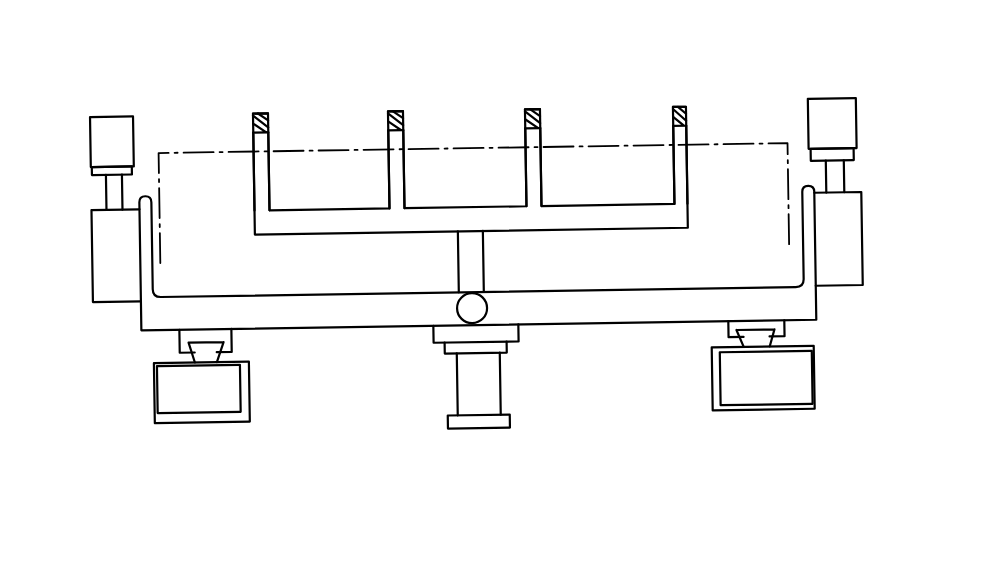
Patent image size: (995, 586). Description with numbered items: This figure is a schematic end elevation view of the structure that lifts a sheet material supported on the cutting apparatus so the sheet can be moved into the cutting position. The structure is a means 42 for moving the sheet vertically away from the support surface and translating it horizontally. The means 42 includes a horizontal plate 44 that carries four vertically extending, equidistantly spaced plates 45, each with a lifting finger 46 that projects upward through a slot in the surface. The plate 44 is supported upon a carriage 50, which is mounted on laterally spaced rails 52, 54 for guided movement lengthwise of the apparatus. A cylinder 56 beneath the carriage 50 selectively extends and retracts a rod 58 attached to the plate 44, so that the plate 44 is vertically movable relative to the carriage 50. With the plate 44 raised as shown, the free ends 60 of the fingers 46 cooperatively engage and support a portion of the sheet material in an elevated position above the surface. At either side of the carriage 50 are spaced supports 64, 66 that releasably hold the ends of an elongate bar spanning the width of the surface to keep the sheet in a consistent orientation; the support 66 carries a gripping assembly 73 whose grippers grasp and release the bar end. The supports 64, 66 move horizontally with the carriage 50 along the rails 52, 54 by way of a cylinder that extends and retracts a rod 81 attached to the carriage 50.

The means for moving the sheet material 42 is at (604, 408).
The horizontal plate 44 is at (477, 207).
The vertically extending plates 45 is at (255, 178).
The lifting fingers 46 is at (270, 120).
The carriage 50 is at (367, 318).
The rail 52 is at (205, 349).
The rail 54 is at (758, 344).
The cylinder 56 is at (485, 390).
The rod 58 is at (465, 257).
The free ends of the fingers 60 is at (263, 109).
The support 64 is at (870, 171).
The support 66 is at (68, 207).
The gripping assembly 73 is at (152, 110).
The rod 81 is at (487, 308).